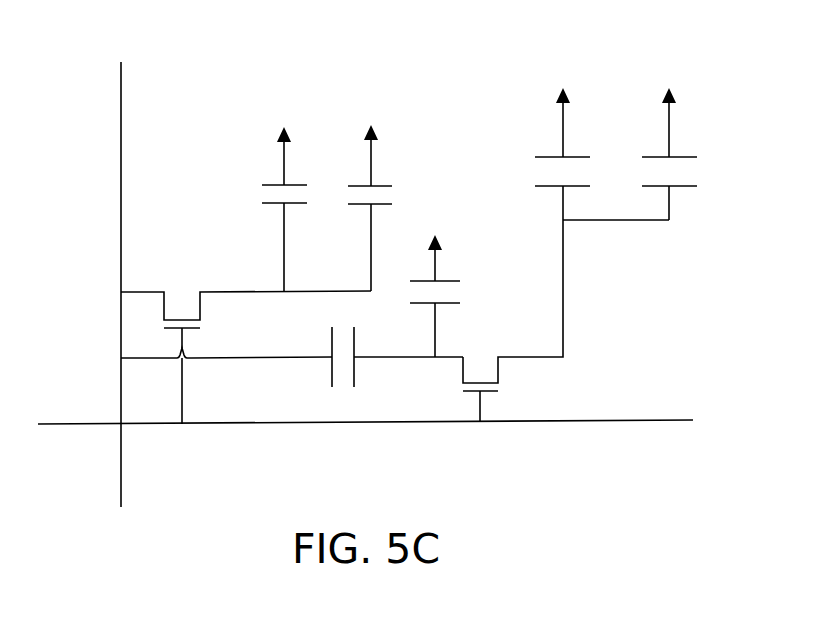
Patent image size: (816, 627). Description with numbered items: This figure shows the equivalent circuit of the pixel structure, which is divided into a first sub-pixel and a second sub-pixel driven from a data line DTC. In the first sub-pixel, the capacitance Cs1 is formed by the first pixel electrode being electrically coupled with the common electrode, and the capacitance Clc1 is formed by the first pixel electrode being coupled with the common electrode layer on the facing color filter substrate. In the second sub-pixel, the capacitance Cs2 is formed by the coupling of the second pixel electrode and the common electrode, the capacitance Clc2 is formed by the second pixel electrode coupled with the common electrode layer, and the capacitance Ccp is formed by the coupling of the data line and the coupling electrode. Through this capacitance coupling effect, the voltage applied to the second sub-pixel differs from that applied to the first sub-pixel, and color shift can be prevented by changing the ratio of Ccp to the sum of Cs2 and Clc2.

The data line DTC is at (121, 269).
The capacitance Cs1 is at (263, 209).
The capacitance Clc1 is at (392, 208).
The capacitance Ccp is at (395, 373).
The capacitance Clc2 is at (540, 137).
The capacitance Cs2 is at (650, 154).